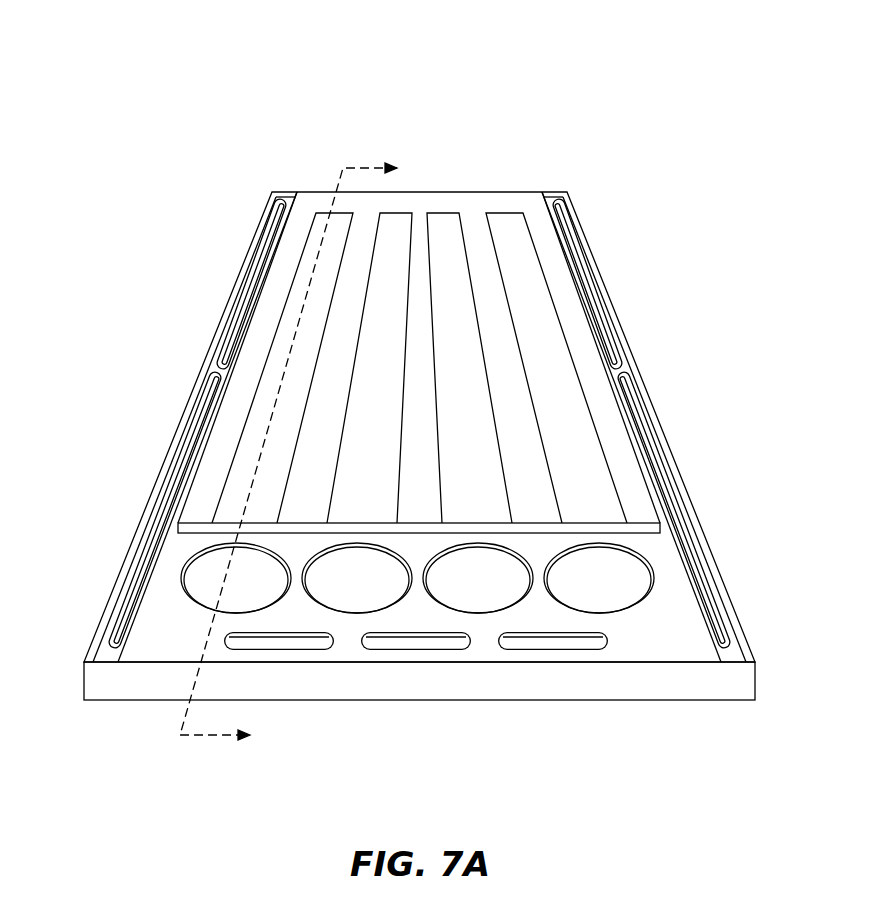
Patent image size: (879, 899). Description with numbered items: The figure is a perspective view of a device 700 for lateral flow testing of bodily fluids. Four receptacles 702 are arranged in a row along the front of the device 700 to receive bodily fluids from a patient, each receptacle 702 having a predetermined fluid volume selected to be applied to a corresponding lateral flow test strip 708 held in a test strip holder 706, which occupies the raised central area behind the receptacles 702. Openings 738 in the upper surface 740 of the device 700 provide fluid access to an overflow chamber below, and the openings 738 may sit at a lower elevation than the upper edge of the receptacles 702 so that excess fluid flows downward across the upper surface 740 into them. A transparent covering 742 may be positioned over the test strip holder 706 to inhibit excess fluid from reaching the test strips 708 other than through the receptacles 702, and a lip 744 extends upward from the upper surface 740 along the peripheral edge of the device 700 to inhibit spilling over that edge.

The device 700 is at (203, 115).
The receptacles 702 is at (258, 597).
The test strip holder 706 is at (470, 213).
The lateral flow test strips 708 is at (467, 248).
The openings 738 is at (220, 345).
The upper surface 740 is at (665, 598).
The transparent covering 742 is at (628, 480).
The lip 744 is at (160, 507).